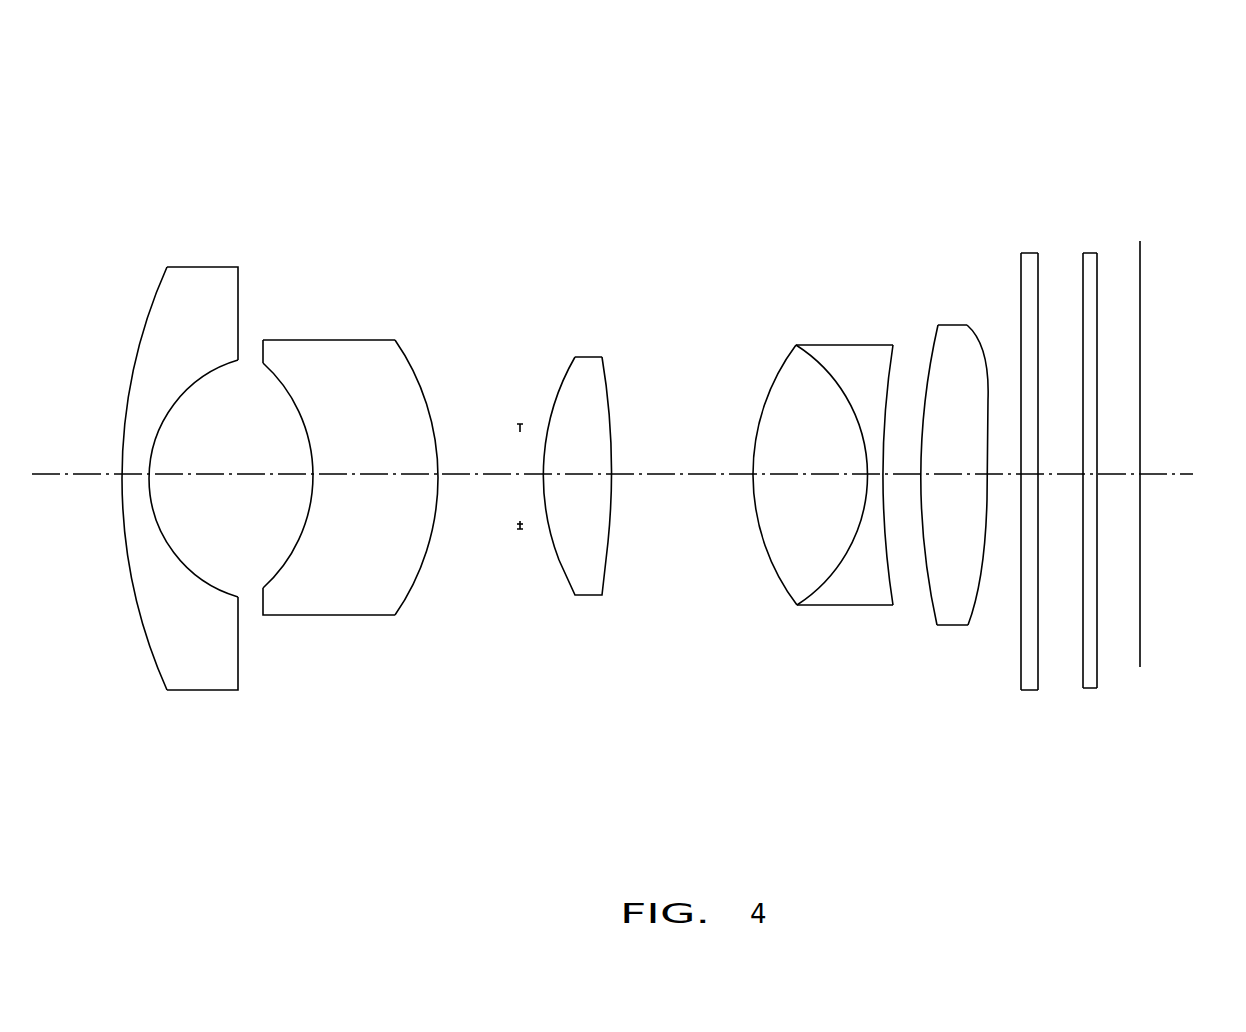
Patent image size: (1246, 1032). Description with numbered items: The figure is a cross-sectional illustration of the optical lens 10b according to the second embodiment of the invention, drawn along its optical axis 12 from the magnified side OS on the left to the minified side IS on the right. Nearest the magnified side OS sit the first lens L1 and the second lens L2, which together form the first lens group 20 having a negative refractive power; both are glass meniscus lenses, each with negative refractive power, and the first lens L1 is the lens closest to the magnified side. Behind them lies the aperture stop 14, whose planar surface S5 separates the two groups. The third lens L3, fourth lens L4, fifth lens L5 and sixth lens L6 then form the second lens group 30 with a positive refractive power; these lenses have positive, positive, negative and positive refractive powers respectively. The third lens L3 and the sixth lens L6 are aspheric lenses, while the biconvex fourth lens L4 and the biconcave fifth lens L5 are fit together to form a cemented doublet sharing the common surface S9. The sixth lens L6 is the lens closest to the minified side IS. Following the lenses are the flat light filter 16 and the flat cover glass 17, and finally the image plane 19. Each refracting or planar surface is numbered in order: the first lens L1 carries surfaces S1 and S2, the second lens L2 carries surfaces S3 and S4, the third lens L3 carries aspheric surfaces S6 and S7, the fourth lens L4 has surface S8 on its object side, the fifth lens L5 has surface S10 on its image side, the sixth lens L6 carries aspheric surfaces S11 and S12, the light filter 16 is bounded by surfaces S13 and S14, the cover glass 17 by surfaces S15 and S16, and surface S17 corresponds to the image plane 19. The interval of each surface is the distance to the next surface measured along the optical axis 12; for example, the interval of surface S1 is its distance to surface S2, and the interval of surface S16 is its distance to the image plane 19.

The optical lens 10b is at (125, 52).
The optical axis 12 is at (65, 473).
The aperture stop 14 is at (520, 424).
The light filter 16 is at (1011, 465).
The cover glass 17 is at (1107, 465).
The image plane 19 is at (1165, 460).
The first lens group 20 is at (492, 137).
The second lens group 30 is at (1002, 142).
The object side OS is at (76, 169).
The image side IS is at (1224, 158).
The first lens L1 is at (186, 455).
The second lens L2 is at (350, 480).
The third lens L3 is at (581, 465).
The fourth lens L4 is at (792, 476).
The fifth lens L5 is at (851, 473).
The sixth lens L6 is at (955, 467).
The surface S1 is at (133, 590).
The surface S2 is at (245, 593).
The surface S3 is at (263, 590).
The surface S4 is at (413, 583).
The surface S5 is at (520, 529).
The surface S6 is at (559, 560).
The surface S7 is at (608, 542).
The surface S8 is at (768, 552).
The surface S9 is at (840, 565).
The surface S10 is at (888, 560).
The surface S11 is at (932, 583).
The surface S12 is at (980, 598).
The surface S13 is at (1021, 613).
The surface S14 is at (1038, 648).
The surface S15 is at (1083, 637).
The surface S16 is at (1097, 657).
The surface S17 is at (1140, 638).